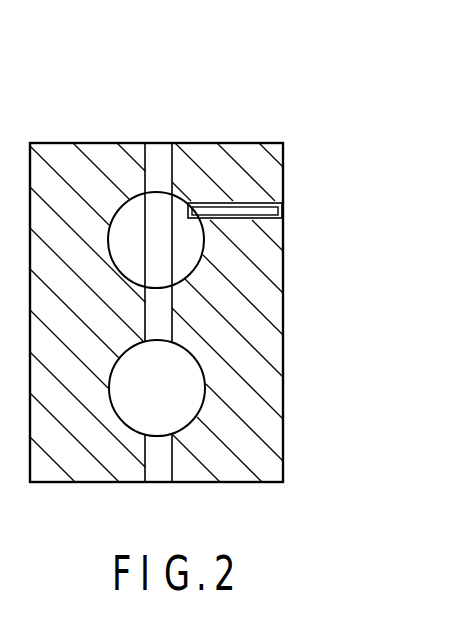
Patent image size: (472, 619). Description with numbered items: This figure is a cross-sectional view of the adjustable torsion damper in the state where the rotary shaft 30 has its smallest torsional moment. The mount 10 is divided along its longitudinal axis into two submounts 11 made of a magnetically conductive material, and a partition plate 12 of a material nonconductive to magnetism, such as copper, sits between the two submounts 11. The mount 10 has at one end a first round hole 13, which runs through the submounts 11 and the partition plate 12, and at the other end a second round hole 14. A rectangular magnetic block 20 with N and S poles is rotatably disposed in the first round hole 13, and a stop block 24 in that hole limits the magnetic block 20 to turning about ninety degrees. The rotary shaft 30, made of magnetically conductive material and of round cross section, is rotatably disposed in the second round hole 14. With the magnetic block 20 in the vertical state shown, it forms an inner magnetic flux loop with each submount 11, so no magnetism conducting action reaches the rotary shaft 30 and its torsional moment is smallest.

The mount 10 is at (205, 247).
The submount 11 is at (85, 155).
The partition plate 12 is at (157, 152).
The first round hole 13 is at (244, 245).
The second round hole 14 is at (245, 380).
The magnetic block 20 is at (172, 242).
The stop block 24 is at (258, 202).
The rotary shaft 30 is at (192, 397).